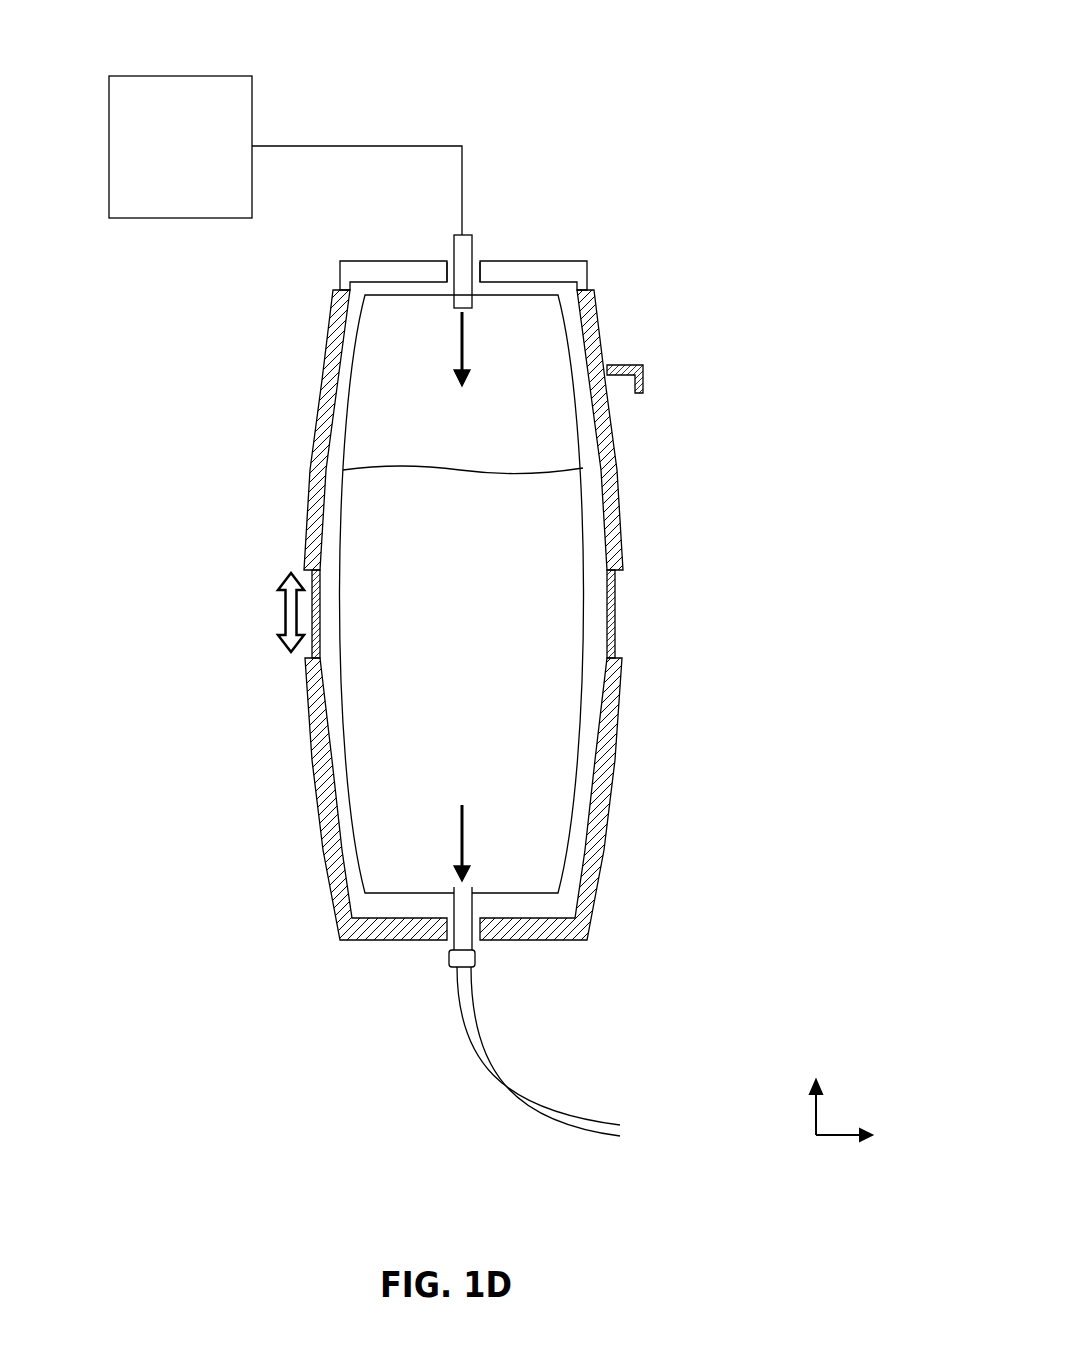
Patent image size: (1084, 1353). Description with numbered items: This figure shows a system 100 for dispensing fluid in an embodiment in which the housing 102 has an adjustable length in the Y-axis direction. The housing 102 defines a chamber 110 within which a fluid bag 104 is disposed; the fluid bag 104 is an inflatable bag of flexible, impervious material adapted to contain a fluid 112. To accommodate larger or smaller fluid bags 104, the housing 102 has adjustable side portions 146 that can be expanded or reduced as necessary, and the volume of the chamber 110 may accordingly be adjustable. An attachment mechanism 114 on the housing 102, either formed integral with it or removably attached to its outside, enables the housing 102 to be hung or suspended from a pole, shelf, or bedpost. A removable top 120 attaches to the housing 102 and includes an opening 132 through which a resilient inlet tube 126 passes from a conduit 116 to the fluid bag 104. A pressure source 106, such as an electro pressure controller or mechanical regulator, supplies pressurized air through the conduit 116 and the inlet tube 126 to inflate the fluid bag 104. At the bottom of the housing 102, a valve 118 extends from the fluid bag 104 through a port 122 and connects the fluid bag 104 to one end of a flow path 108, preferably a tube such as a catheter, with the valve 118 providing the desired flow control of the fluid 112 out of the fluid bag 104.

The system for dispensing fluid 100 is at (692, 58).
The housing 102 is at (480, 611).
The fluid bag 104 is at (355, 363).
The pressure source 106 is at (162, 187).
The flow path 108 is at (458, 1022).
The chamber 110 is at (584, 438).
The fluid 112 is at (478, 587).
The attachment mechanism 114 is at (645, 373).
The conduit 116 is at (357, 176).
The valve 118 is at (449, 958).
The top 120 is at (588, 272).
The port 122 is at (476, 933).
The resilient inlet tube 126 is at (454, 253).
The opening 132 is at (473, 272).
The adjustable side portions 146 is at (612, 610).